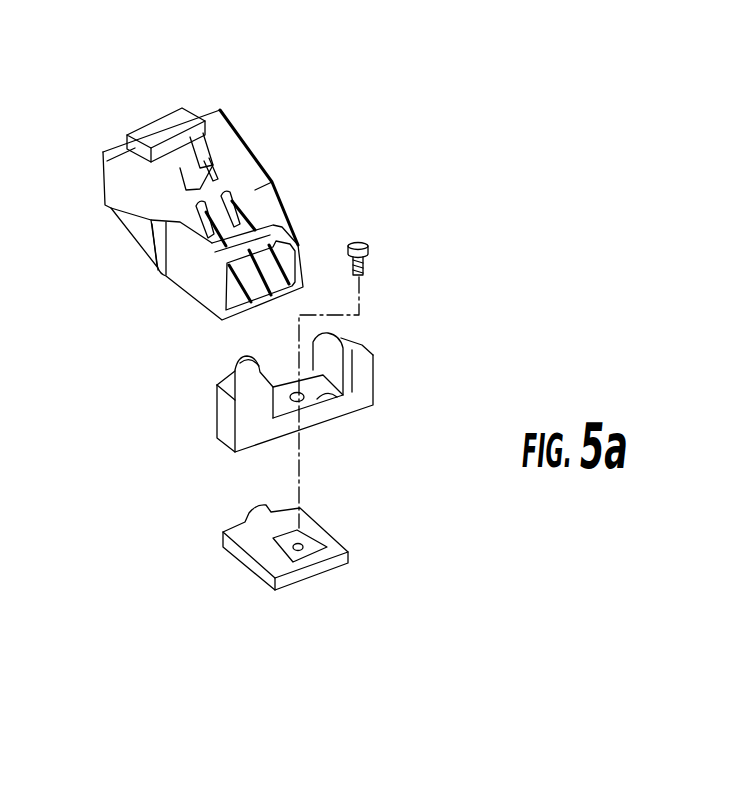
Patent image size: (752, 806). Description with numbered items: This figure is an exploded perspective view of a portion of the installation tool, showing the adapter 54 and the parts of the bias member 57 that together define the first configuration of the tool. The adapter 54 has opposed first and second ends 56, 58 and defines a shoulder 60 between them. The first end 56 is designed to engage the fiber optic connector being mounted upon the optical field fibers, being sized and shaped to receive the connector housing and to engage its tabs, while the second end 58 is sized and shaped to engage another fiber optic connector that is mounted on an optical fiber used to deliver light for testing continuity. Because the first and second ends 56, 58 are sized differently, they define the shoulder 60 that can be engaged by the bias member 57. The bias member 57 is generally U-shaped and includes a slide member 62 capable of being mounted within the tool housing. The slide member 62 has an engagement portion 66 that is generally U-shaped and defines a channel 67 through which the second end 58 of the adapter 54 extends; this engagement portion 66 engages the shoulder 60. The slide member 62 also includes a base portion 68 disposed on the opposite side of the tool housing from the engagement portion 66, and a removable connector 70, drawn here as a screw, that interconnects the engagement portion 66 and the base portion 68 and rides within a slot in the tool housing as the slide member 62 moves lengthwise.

The adapter 54 is at (252, 143).
The first end 56 is at (207, 118).
The bias member 57 is at (530, 232).
The second end 58 is at (228, 290).
The shoulder 60 is at (168, 246).
The slide member 62 is at (175, 360).
The engagement portion 66 is at (358, 378).
The channel 67 is at (333, 393).
The base portion 68 is at (333, 563).
The removable connector 70 is at (370, 247).